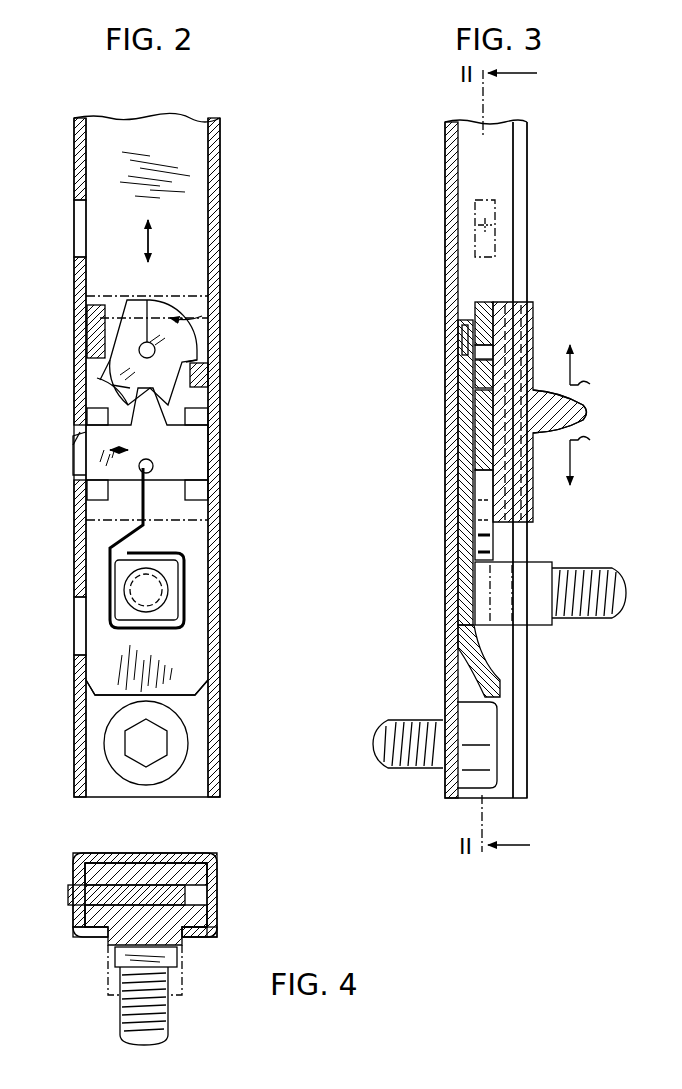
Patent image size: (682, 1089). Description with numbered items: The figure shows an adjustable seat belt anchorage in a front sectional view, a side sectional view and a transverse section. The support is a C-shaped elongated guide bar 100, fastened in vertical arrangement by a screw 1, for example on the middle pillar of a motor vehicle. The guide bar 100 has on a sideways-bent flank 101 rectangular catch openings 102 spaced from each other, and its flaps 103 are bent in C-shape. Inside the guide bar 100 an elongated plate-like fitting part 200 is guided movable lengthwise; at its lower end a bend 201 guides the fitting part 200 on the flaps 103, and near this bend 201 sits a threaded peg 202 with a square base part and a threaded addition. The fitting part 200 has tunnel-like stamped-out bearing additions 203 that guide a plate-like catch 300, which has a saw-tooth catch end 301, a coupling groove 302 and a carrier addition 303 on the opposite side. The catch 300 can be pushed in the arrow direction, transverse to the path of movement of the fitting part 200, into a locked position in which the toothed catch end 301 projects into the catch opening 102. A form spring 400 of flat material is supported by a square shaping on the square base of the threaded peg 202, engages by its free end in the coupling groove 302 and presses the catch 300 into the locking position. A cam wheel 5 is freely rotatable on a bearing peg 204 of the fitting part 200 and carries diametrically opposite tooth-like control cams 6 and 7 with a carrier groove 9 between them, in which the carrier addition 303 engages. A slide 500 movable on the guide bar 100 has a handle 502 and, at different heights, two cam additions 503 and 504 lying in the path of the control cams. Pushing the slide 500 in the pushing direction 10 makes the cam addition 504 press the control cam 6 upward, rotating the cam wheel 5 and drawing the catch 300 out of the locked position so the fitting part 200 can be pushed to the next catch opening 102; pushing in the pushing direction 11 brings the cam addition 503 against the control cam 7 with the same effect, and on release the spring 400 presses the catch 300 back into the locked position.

In FIG. 2, the screw 1 is at (175, 744).
In FIG. 3, the screw 1 is at (488, 744).
In FIG. 2, the cam wheel 5 is at (200, 310).
In FIG. 3, the cam wheel 5 is at (478, 312).
In FIG. 2, the control cam 6 is at (196, 358).
In FIG. 2, the control cam 7 is at (100, 380).
In FIG. 2, the carrier groove 9 is at (130, 386).
In FIG. 3, the pushing direction 10 is at (590, 365).
In FIG. 3, the pushing direction 11 is at (590, 458).
In FIG. 2, the guide bar 100 is at (223, 176).
In FIG. 3, the guide bar 100 is at (440, 170).
In FIG. 4, the guide bar 100 is at (72, 930).
In FIG. 2, the flank 101 is at (86, 152).
In FIG. 4, the flank 101 is at (76, 866).
In FIG. 2, the catch opening 102 is at (82, 226).
In FIG. 3, the catch opening 102 is at (497, 228).
In FIG. 4, the catch opening 102 is at (78, 906).
In FIG. 3, the flap 103 is at (518, 166).
In FIG. 4, the flap 103 is at (100, 945).
In FIG. 2, the fitting part 200 is at (185, 536).
In FIG. 3, the fitting part 200 is at (462, 442).
In FIG. 4, the fitting part 200 is at (270, 856).
In FIG. 2, the bend 201 is at (185, 683).
In FIG. 3, the bend 201 is at (505, 684).
In FIG. 2, the threaded peg 202 is at (150, 588).
In FIG. 3, the threaded peg 202 is at (585, 624).
In FIG. 4, the threaded peg 202 is at (166, 1008).
In FIG. 2, the bearing addition 203 is at (97, 416).
In FIG. 2, the bearing peg 204 is at (147, 300).
In FIG. 3, the bearing peg 204 is at (480, 355).
In FIG. 2, the catch 300 is at (175, 446).
In FIG. 3, the catch 300 is at (472, 462).
In FIG. 4, the catch 300 is at (190, 898).
In FIG. 2, the catch end 301 is at (76, 474).
In FIG. 4, the catch end 301 is at (68, 896).
In FIG. 2, the coupling groove 302 is at (152, 462).
In FIG. 2, the carrier addition 303 is at (140, 406).
In FIG. 2, the form spring 400 is at (108, 572).
In FIG. 3, the form spring 400 is at (478, 536).
In FIG. 3, the slide 500 is at (525, 332).
In FIG. 4, the slide 500 is at (210, 925).
In FIG. 3, the handle 502 is at (580, 411).
In FIG. 4, the handle 502 is at (110, 995).
In FIG. 2, the cam addition 503 is at (87, 318).
In FIG. 2, the cam addition 504 is at (208, 383).